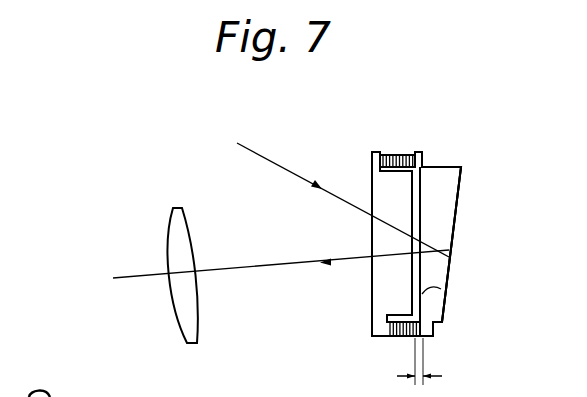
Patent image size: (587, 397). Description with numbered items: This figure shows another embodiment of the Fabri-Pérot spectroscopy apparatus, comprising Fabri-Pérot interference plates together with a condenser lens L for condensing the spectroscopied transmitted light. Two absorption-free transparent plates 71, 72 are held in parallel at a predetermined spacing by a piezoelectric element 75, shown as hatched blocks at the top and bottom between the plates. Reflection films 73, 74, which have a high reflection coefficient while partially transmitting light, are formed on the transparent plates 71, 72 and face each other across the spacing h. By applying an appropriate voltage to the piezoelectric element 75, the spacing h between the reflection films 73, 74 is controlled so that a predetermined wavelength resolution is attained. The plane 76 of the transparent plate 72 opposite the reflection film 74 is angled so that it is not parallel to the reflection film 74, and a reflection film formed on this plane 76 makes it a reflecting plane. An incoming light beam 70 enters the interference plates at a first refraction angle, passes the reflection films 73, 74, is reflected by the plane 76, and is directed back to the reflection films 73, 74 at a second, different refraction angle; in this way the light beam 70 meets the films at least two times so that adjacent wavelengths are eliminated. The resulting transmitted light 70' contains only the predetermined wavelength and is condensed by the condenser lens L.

The condenser lens L is at (178, 207).
The light beam 70 is at (343, 184).
The transmitted light 70' is at (281, 287).
The transparent plate 71 is at (378, 196).
The transparent plate 72 is at (449, 178).
The reflection film 73 is at (390, 154).
The reflection film 74 is at (389, 164).
The piezoelectric element 75 is at (405, 154).
The plane 76 is at (456, 210).
The spacing h is at (419, 367).